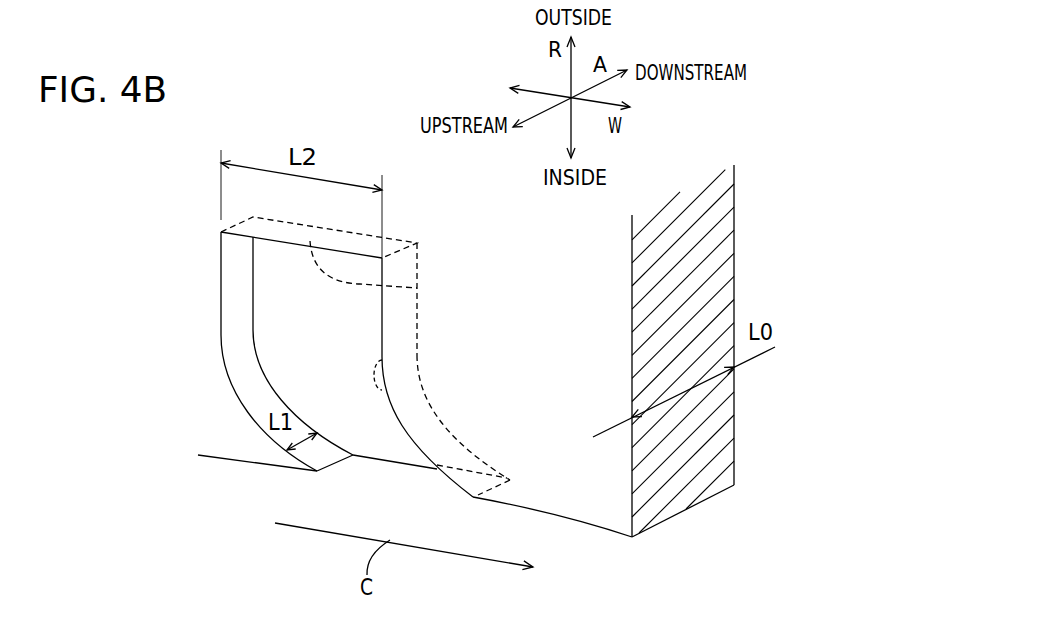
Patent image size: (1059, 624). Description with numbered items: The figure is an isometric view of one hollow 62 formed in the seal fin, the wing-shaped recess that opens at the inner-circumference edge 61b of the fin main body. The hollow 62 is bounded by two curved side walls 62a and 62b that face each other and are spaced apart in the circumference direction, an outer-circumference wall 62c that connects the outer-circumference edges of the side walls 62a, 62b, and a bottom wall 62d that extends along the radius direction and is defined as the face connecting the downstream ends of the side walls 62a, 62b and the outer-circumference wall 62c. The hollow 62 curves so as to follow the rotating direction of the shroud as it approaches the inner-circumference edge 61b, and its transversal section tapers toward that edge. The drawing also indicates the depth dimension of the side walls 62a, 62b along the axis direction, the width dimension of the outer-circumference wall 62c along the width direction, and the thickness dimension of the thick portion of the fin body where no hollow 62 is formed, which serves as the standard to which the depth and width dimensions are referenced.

The hollow 62 is at (330, 357).
The side wall 62a is at (248, 350).
The side wall 62b is at (385, 386).
The outer-circumference wall 62c is at (417, 288).
The bottom wall 62d is at (310, 298).
The inner-circumference edge 61b is at (243, 460).